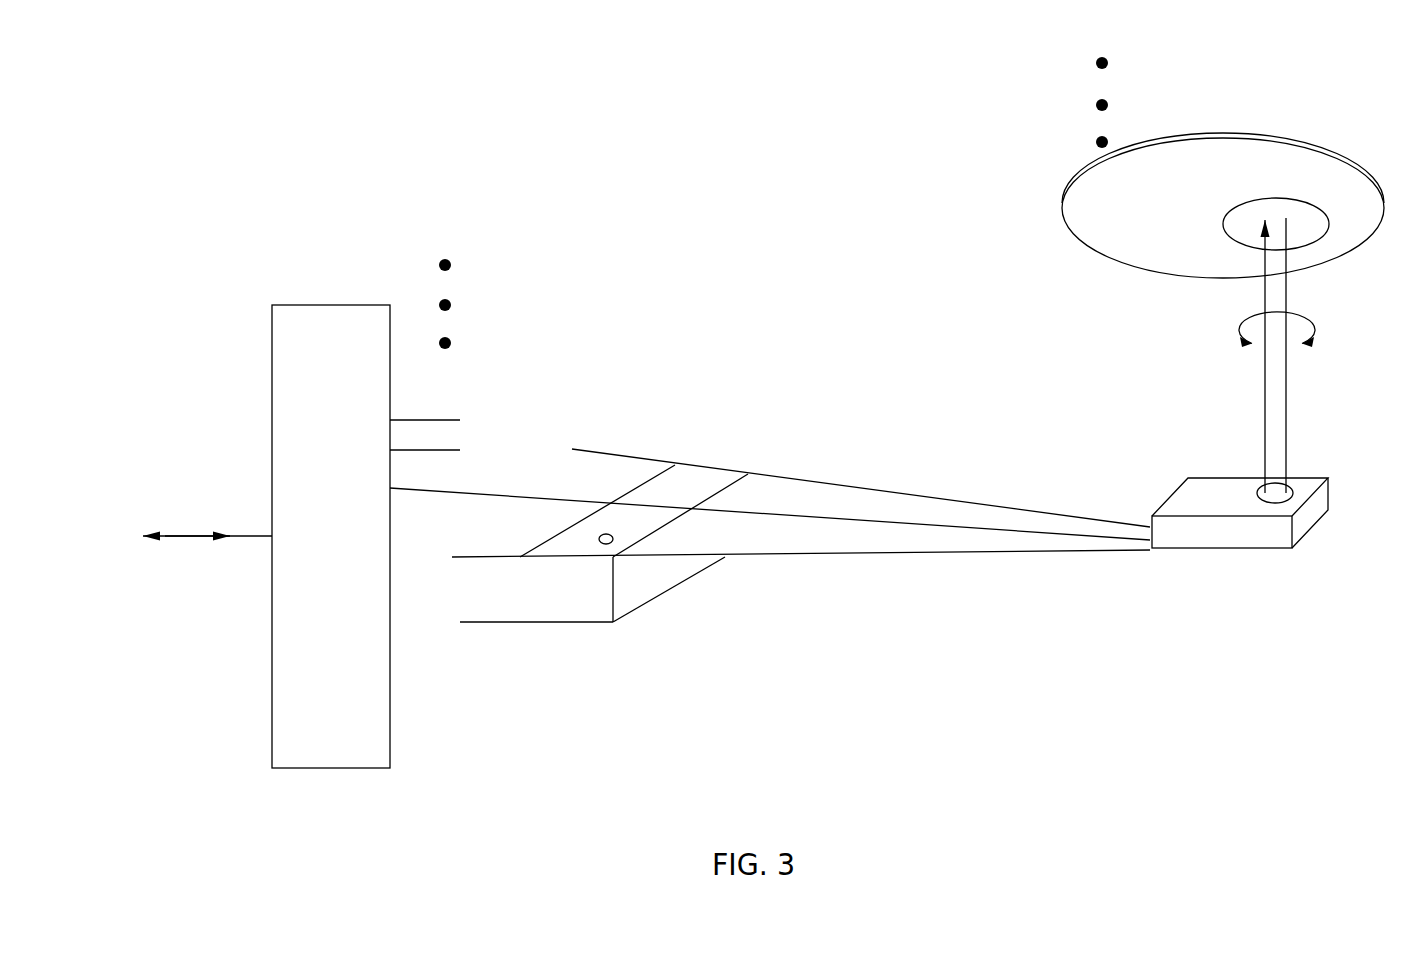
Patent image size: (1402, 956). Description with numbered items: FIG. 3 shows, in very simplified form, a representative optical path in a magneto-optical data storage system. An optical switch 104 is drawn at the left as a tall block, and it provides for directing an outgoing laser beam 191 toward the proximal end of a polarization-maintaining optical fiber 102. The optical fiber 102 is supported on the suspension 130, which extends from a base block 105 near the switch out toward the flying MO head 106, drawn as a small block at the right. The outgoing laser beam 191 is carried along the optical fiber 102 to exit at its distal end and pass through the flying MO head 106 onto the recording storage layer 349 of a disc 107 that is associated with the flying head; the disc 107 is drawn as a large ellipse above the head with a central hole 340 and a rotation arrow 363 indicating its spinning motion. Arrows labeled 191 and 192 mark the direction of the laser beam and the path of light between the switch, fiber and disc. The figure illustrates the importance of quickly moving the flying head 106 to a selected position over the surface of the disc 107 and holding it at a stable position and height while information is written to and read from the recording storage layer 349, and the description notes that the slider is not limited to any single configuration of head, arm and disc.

The optical fiber 102 is at (516, 495).
The optical switch 104 is at (310, 302).
The arm base block 105 is at (543, 625).
The flying MO head 106 is at (1232, 550).
The disc 107 is at (1100, 257).
The suspension 130 is at (888, 553).
The outgoing laser beam 191 is at (212, 545).
The motion direction arrow 192 is at (155, 525).
The disk hole 340 is at (1305, 215).
The recording storage layer 349 is at (1222, 160).
The rotation direction 363 is at (1297, 329).